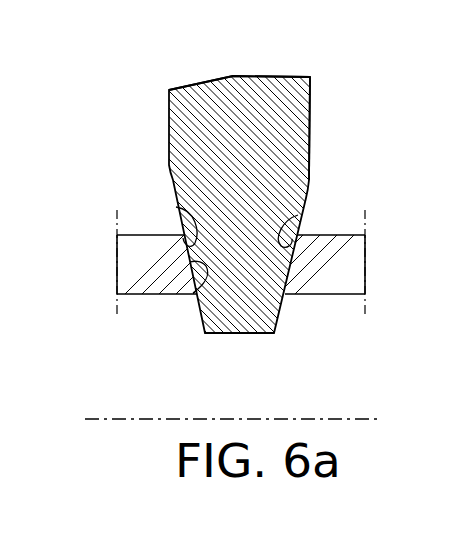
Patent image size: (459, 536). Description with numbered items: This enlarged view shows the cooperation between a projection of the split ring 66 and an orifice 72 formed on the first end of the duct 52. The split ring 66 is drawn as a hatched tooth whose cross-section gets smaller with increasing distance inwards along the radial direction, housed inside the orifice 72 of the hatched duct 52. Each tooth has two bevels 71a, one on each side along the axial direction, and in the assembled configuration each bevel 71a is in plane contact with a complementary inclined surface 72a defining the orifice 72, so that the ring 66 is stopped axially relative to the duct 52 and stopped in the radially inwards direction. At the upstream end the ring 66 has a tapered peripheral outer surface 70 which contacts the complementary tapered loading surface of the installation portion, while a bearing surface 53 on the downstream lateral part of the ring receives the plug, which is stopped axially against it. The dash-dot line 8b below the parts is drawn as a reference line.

The split ring 66 is at (158, 79).
The tapered peripheral outer surface 70 is at (207, 82).
The bearing surface 53 is at (310, 103).
The inclined surface 72a is at (176, 207).
The duct 52 is at (111, 245).
The orifice 72 is at (193, 293).
The bevel 71a is at (197, 319).
The centre line 8b is at (95, 419).